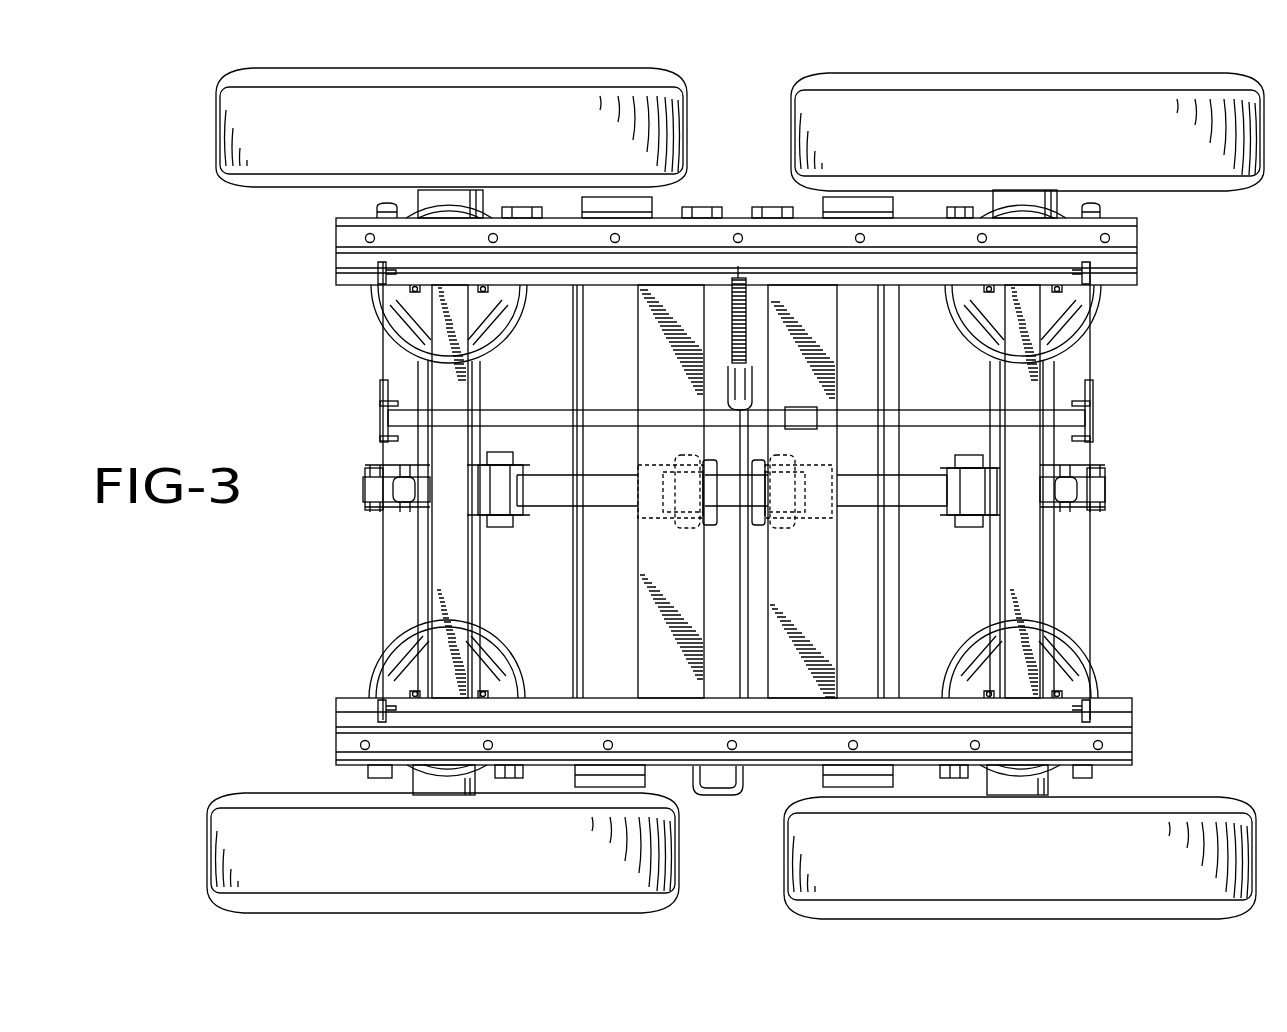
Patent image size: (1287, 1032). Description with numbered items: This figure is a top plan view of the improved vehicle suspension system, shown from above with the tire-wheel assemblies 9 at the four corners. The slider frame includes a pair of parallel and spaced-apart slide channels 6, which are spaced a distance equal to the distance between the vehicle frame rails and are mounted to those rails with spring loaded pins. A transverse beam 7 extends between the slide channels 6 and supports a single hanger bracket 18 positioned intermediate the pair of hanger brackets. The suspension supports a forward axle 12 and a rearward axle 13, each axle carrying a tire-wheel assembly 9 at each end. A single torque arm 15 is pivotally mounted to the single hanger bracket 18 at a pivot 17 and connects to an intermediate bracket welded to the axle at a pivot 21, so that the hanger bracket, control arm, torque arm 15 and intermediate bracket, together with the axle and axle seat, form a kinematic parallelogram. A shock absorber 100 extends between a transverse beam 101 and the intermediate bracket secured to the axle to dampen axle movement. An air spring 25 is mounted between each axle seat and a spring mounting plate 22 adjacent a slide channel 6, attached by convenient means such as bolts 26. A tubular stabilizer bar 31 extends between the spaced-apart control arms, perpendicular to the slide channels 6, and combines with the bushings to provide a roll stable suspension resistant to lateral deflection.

The slide channels 6 is at (352, 282).
The transverse beam 7 is at (812, 320).
The tire-wheel assembly 9 is at (820, 128).
The forward axle 12 is at (415, 375).
The rearward axle 13 is at (1002, 378).
The torque arm 15 is at (548, 500).
The pivot 17 is at (681, 538).
The single hanger bracket 18 is at (690, 432).
The pivot 21 is at (520, 460).
The spring mounting plate 22 is at (1068, 315).
The air spring 25 is at (968, 640).
The bolts 26 is at (990, 294).
The tubular stabilizer bar 31 is at (597, 347).
The shock absorber 100 is at (370, 482).
The transverse beam 101 is at (448, 570).